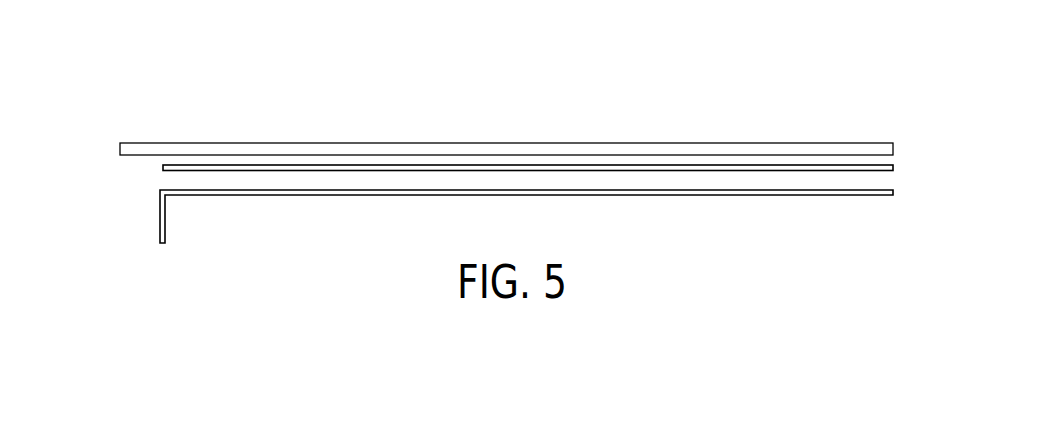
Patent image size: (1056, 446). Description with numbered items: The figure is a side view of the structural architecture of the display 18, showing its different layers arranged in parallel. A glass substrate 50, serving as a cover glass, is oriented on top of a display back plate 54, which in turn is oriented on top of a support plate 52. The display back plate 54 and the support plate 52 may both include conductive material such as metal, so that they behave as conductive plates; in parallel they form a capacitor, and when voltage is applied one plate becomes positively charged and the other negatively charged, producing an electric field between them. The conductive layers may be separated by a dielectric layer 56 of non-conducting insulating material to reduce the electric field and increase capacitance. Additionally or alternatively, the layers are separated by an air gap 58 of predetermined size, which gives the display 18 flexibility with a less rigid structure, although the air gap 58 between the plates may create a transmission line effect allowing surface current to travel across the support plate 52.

The display 18 is at (196, 66).
The glass substrate 50 is at (176, 152).
The support plate 52 is at (160, 228).
The display back plate 54 is at (162, 167).
The dielectric layer 56 is at (892, 183).
The air gap 58 is at (142, 167).